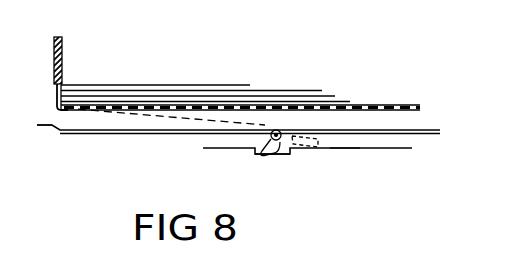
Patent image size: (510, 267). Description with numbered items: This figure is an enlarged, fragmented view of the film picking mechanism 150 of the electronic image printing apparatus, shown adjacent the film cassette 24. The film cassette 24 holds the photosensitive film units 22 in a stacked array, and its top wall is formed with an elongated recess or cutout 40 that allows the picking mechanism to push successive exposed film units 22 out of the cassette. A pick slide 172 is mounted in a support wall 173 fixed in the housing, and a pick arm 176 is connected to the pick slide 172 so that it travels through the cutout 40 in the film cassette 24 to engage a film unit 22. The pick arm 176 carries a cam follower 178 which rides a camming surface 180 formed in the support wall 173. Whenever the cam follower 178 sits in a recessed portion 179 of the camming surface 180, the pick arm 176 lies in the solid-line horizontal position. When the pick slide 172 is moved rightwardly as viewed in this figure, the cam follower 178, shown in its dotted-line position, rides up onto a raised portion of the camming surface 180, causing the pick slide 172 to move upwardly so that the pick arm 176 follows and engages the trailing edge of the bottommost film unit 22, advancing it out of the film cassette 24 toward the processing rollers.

The photosensitive film unit 22 is at (297, 93).
The film cassette 24 is at (64, 58).
The elongated recess or cutout 40 is at (56, 88).
The film picking mechanism 150 is at (398, 92).
The pick slide 172 is at (427, 134).
The support wall 173 is at (203, 149).
The pick arm 176 is at (81, 134).
The cam follower 178 is at (265, 157).
The recessed portion 179 is at (281, 154).
The camming surface 180 is at (345, 140).